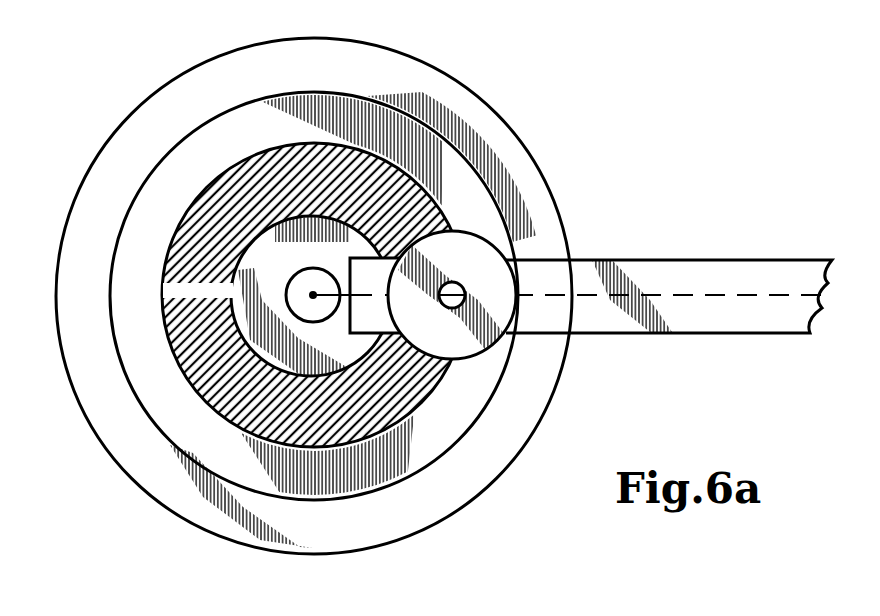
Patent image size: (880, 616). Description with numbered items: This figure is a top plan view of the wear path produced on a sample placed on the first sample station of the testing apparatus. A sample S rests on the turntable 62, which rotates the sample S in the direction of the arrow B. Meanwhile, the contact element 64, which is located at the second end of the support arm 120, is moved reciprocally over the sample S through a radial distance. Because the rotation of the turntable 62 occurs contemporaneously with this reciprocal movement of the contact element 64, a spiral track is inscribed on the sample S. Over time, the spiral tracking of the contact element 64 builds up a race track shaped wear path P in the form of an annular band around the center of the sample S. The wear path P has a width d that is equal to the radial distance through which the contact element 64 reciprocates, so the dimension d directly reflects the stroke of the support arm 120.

The turntable 62 is at (200, 88).
The sample S is at (193, 163).
The wear path P is at (335, 140).
The contact element 64 is at (472, 230).
The support arm 120 is at (623, 260).
The width d is at (232, 297).
The arrow B is at (377, 569).